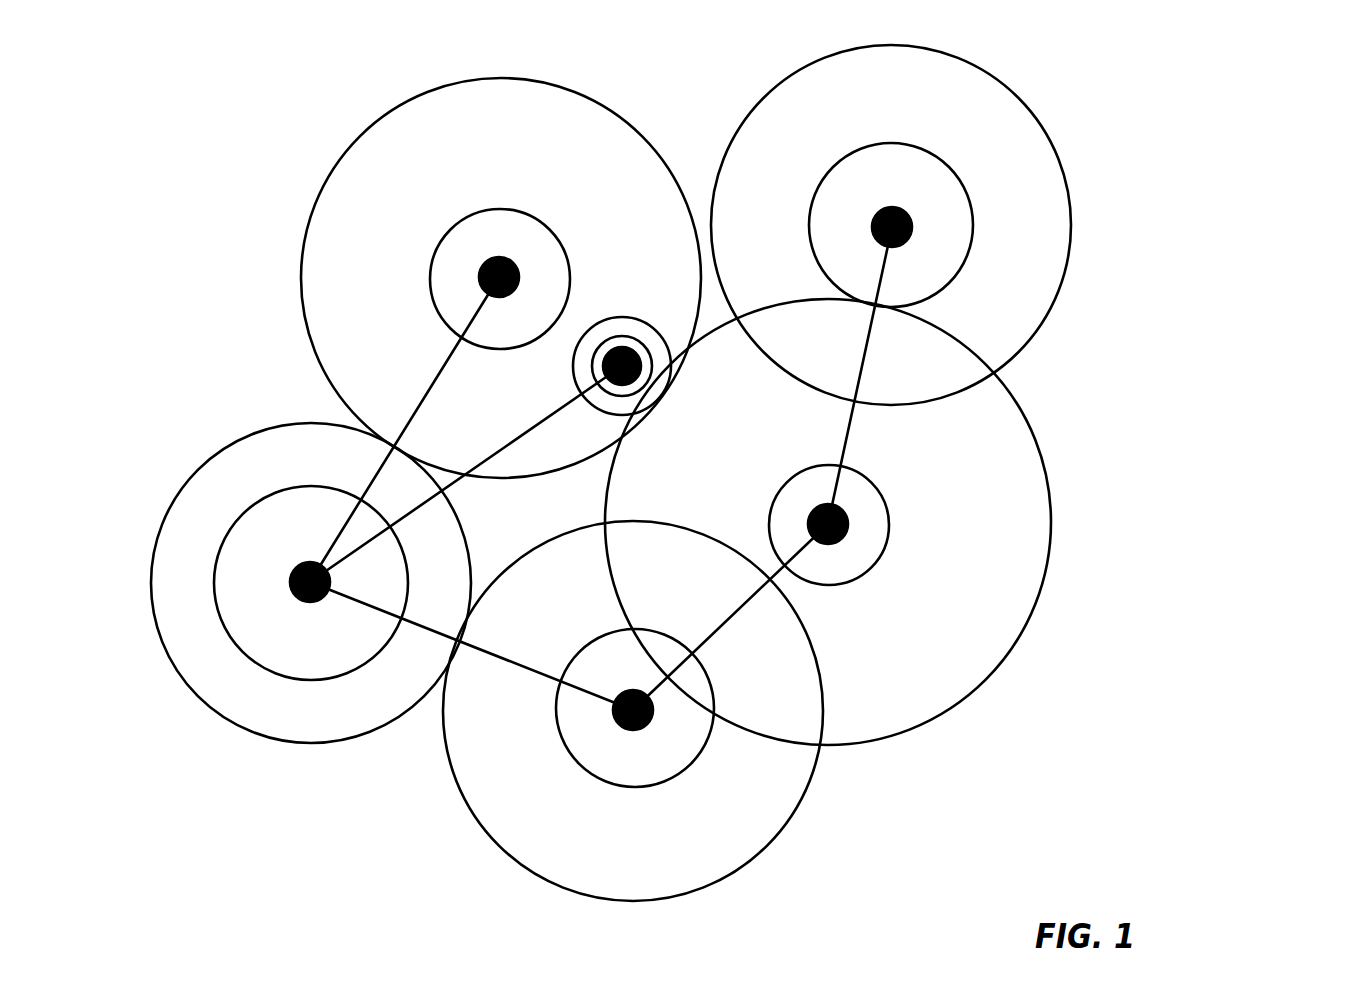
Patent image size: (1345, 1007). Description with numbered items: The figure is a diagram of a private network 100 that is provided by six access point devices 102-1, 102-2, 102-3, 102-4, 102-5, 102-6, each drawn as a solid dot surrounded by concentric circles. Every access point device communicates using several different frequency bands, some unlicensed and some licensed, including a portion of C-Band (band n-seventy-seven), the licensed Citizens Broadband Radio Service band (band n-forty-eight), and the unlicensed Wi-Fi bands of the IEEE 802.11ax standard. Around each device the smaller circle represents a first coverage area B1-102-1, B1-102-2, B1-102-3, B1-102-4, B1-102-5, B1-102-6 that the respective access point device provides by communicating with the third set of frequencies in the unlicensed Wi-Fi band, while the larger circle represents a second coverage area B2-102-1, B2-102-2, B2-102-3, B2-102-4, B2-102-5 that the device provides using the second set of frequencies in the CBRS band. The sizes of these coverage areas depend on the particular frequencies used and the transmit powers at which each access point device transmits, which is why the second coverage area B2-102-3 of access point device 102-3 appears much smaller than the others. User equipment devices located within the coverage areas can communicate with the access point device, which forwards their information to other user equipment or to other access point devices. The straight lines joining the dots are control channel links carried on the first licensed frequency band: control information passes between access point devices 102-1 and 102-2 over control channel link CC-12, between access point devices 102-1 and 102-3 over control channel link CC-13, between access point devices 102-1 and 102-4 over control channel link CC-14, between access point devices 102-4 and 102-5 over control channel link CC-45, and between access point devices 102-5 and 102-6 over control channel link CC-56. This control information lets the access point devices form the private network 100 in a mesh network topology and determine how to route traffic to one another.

The private network 100 is at (1212, 72).
The access point device 102-1 is at (305, 566).
The access point device 102-2 is at (498, 264).
The access point device 102-3 is at (608, 380).
The access point device 102-4 is at (617, 700).
The access point device 102-5 is at (824, 505).
The access point device 102-6 is at (893, 210).
The first coverage area B1-102-1 is at (301, 486).
The first coverage area B1-102-2 is at (497, 212).
The first coverage area B1-102-3 is at (622, 336).
The first coverage area B1-102-4 is at (600, 783).
The first coverage area B1-102-5 is at (775, 493).
The first coverage area B1-102-6 is at (893, 143).
The second coverage area B2-102-1 is at (193, 473).
The second coverage area B2-102-2 is at (493, 80).
The second coverage area B2-102-3 is at (573, 367).
The second coverage area B2-102-4 is at (762, 95).
The second coverage area B2-102-5 is at (1037, 445).
The control channel link CC-12 is at (423, 400).
The control channel link CC-13 is at (503, 446).
The control channel link CC-14 is at (538, 637).
The control channel link CC-45 is at (728, 618).
The control channel link CC-56 is at (845, 443).